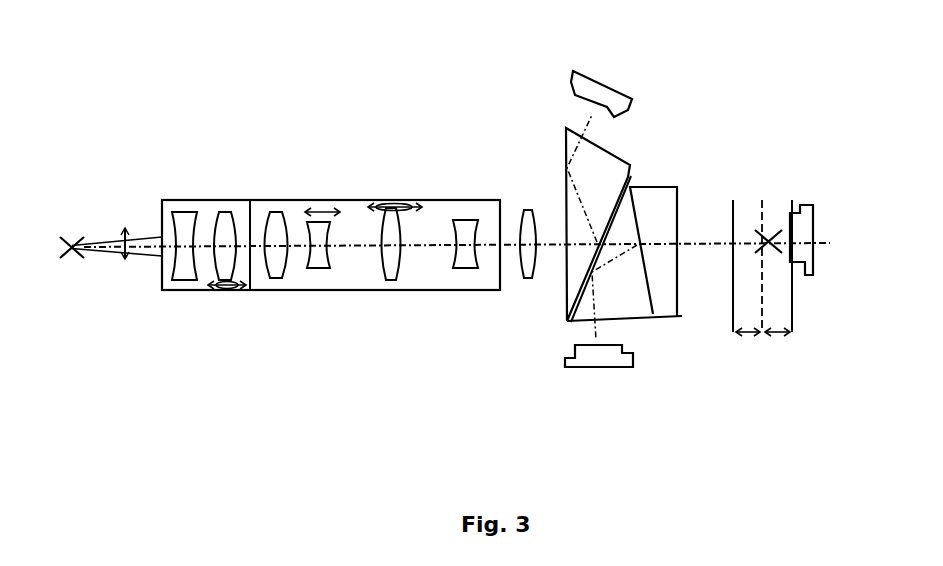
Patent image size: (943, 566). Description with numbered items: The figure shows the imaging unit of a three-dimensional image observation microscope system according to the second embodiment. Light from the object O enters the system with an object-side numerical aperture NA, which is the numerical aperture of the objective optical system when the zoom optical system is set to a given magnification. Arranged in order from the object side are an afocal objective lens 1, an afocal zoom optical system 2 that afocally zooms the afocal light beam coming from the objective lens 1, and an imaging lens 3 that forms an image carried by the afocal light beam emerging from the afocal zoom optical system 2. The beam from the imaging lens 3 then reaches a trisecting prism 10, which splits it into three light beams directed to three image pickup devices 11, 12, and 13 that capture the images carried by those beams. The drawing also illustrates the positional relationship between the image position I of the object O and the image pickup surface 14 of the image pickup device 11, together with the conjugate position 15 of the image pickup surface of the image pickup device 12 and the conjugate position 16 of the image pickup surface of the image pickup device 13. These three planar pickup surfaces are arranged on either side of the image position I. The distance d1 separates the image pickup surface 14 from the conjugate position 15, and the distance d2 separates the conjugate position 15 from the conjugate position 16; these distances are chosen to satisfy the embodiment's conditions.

The object O is at (70, 240).
The object-side numerical aperture NA is at (116, 229).
The afocal objective lens 1 is at (202, 213).
The afocal zoom optical system 2 is at (347, 212).
The imaging lens 3 is at (525, 270).
The trisecting prism 10 is at (583, 293).
The image pickup device 12 is at (568, 368).
The image pickup device 13 is at (573, 90).
The image pickup surface 14 is at (792, 200).
The conjugate position 15 is at (762, 200).
The conjugate position 16 is at (733, 200).
The image pickup device 11 is at (807, 275).
The image position I is at (768, 310).
The distance d1 is at (781, 350).
The distance d2 is at (749, 350).